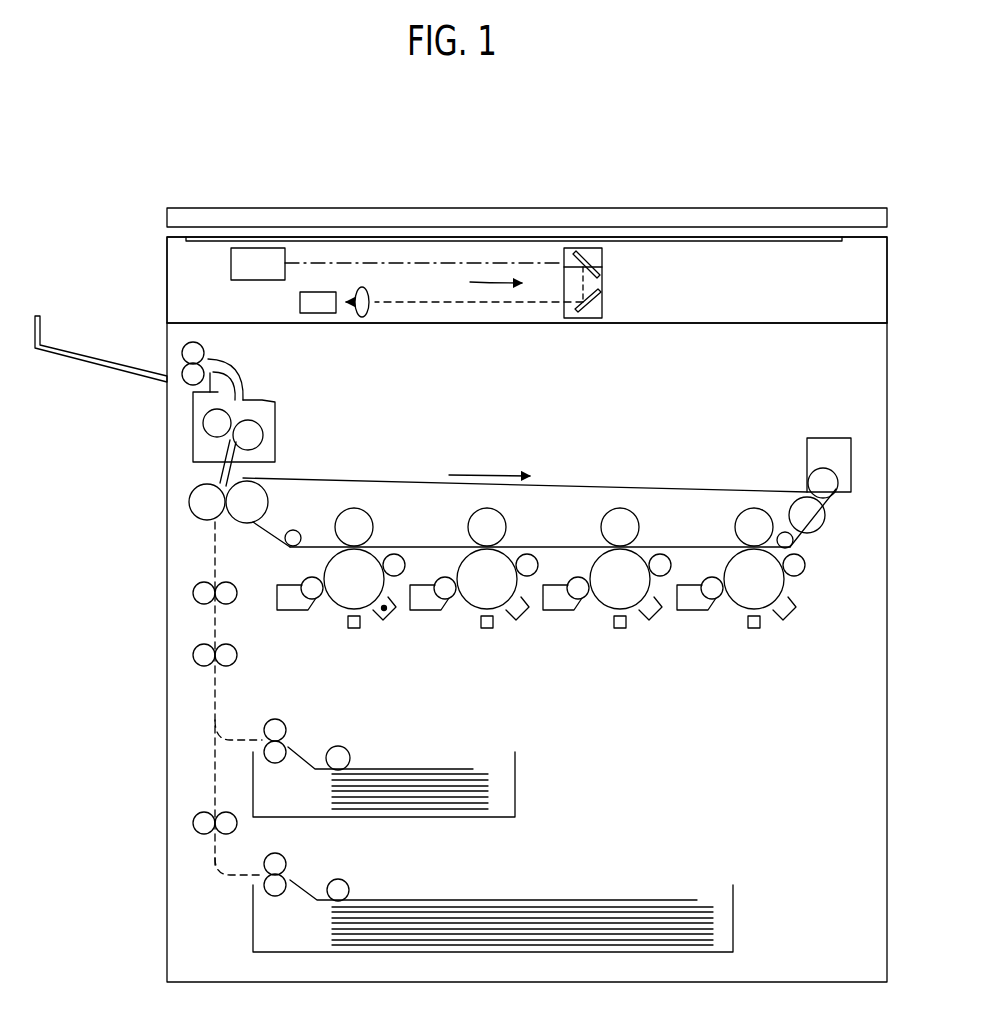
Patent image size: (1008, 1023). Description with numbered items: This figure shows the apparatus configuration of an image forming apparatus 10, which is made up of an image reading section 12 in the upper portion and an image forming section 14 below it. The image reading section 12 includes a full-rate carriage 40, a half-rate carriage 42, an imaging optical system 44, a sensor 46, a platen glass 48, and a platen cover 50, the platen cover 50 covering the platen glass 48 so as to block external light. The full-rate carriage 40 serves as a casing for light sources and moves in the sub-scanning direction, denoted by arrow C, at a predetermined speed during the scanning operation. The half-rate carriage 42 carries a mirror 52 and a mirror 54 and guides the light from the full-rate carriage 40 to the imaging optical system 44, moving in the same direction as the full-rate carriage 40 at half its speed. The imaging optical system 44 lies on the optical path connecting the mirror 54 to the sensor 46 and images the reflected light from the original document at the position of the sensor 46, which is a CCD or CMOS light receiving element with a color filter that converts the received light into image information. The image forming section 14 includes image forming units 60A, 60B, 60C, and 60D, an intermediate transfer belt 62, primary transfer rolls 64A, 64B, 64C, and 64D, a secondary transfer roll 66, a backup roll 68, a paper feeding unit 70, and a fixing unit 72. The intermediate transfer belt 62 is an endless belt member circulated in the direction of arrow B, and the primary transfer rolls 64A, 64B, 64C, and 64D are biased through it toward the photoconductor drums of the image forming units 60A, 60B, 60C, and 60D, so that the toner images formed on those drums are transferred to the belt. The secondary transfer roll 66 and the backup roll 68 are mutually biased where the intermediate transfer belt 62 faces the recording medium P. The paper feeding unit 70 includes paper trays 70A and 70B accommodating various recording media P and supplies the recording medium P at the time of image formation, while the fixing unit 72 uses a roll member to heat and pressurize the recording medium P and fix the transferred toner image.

The image forming apparatus 10 is at (669, 158).
The image reading section 12 is at (161, 262).
The image forming section 14 is at (161, 592).
The full-rate carriage 40 is at (231, 264).
The half-rate carriage 42 is at (602, 280).
The imaging optical system 44 is at (365, 290).
The sensor 46 is at (300, 302).
The platen glass 48 is at (748, 242).
The platen cover 50 is at (772, 206).
The mirror 52 is at (602, 262).
The mirror 54 is at (602, 300).
The image forming unit 60A is at (322, 621).
The image forming unit 60B is at (462, 621).
The image forming unit 60C is at (596, 621).
The image forming unit 60D is at (730, 621).
The intermediate transfer belt 62 is at (579, 486).
The primary transfer roll 64A is at (373, 517).
The primary transfer roll 64B is at (506, 517).
The primary transfer roll 64C is at (634, 512).
The primary transfer roll 64D is at (736, 533).
The secondary transfer roll 66 is at (190, 495).
The backup roll 68 is at (268, 493).
The paper feeding unit 70 is at (309, 726).
The paper tray 70A is at (515, 775).
The paper tray 70B is at (733, 918).
The fixing unit 72 is at (193, 418).
The arrow B is at (487, 473).
The arrow C is at (514, 281).
The recording medium P is at (445, 769).